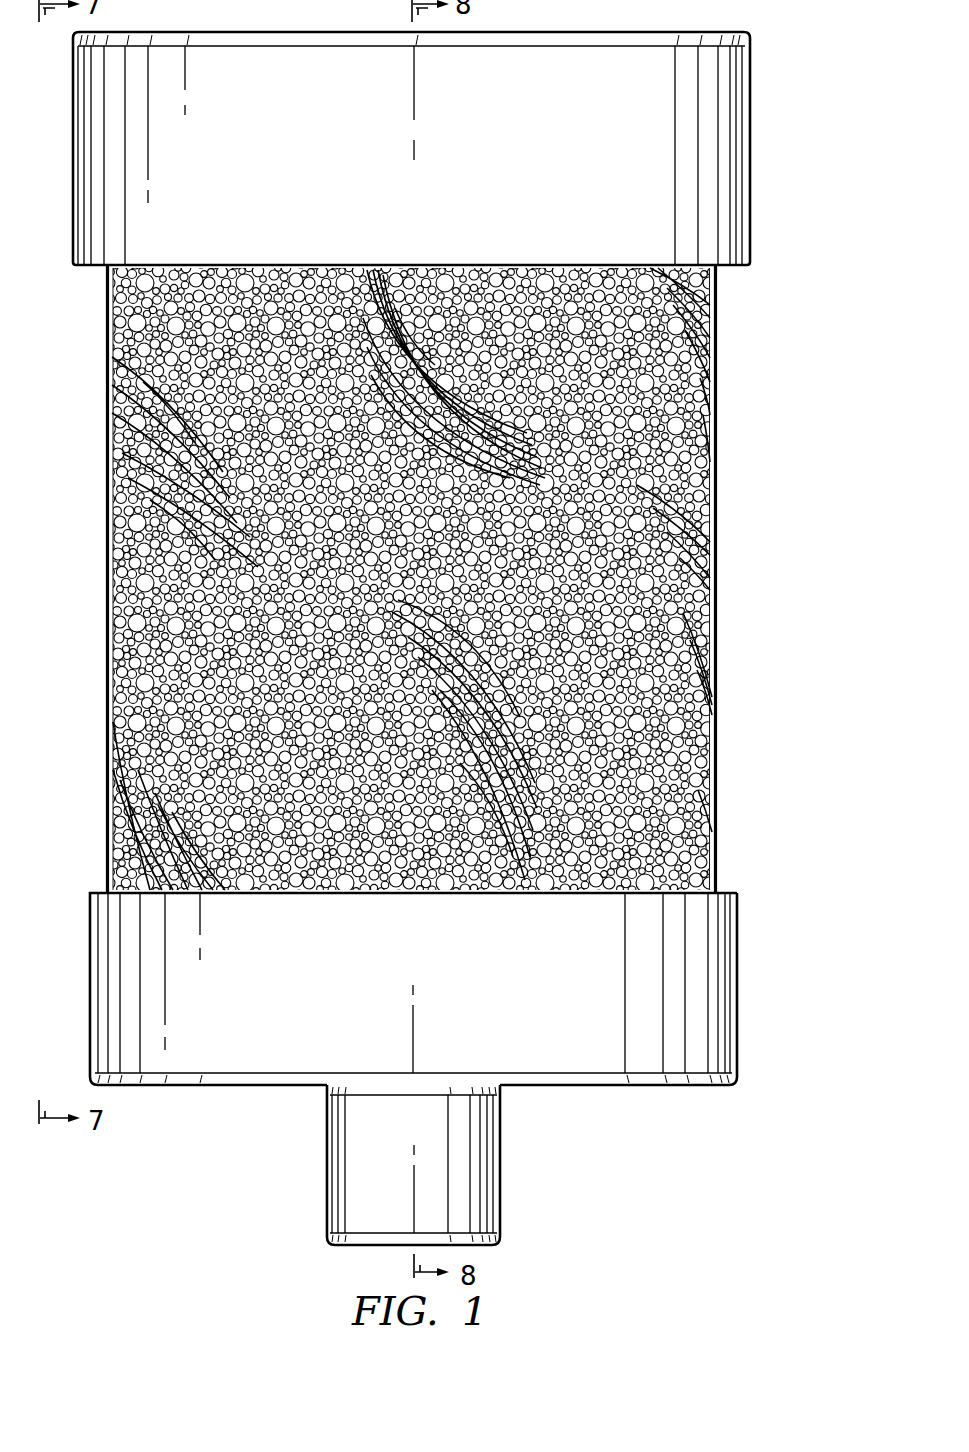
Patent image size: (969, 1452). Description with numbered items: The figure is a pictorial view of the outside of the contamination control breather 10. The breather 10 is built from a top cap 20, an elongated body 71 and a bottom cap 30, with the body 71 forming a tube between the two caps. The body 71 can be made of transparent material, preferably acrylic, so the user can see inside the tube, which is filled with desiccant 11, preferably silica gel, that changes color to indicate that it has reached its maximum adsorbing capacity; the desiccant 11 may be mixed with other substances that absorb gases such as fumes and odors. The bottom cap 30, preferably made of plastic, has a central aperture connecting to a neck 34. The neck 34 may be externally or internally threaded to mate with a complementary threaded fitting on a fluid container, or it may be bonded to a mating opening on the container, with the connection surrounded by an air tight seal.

The contamination control breather 10 is at (466, 623).
The top cap 20 is at (748, 140).
The elongated body 71 is at (718, 500).
The desiccant 11 is at (655, 662).
The bottom cap 30 is at (740, 982).
The neck 34 is at (500, 1160).